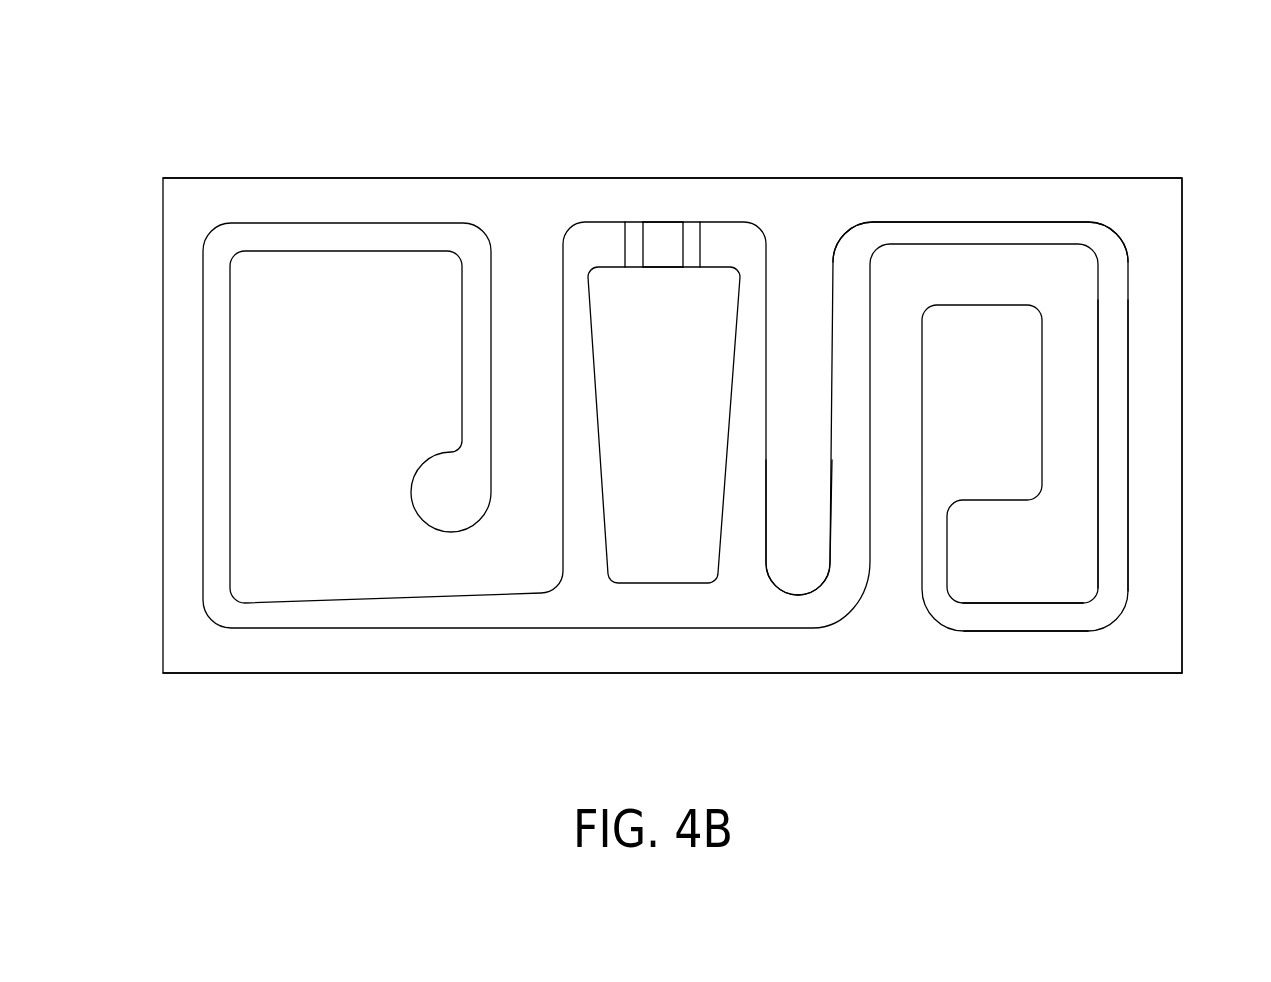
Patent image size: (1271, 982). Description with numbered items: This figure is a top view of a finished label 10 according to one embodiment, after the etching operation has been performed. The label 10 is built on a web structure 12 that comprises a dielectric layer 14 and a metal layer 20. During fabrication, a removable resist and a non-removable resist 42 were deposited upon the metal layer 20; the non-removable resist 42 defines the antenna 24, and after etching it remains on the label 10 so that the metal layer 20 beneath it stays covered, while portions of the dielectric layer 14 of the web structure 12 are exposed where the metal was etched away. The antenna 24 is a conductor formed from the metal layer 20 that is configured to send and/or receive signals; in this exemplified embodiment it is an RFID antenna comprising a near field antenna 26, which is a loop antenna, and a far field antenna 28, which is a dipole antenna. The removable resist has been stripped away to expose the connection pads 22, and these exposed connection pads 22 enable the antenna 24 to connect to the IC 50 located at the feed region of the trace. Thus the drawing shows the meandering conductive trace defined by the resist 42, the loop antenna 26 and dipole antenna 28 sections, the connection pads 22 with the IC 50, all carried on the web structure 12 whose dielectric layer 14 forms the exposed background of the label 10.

The label 10 is at (1171, 121).
The web structure 12 is at (152, 517).
The dielectric layer 14 is at (170, 663).
The metal layer 20 is at (218, 585).
The connection pads 22 is at (639, 232).
The antenna 24 is at (1113, 532).
The near field antenna 26 is at (745, 522).
The far field antenna 28 is at (1046, 617).
The non-removable resist 42 is at (1070, 232).
The IC 50 is at (664, 232).